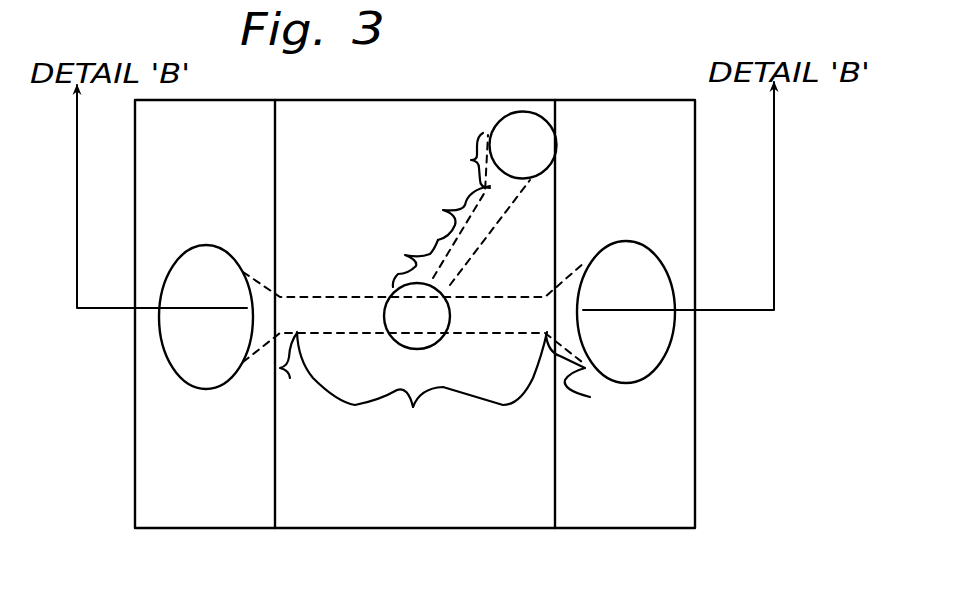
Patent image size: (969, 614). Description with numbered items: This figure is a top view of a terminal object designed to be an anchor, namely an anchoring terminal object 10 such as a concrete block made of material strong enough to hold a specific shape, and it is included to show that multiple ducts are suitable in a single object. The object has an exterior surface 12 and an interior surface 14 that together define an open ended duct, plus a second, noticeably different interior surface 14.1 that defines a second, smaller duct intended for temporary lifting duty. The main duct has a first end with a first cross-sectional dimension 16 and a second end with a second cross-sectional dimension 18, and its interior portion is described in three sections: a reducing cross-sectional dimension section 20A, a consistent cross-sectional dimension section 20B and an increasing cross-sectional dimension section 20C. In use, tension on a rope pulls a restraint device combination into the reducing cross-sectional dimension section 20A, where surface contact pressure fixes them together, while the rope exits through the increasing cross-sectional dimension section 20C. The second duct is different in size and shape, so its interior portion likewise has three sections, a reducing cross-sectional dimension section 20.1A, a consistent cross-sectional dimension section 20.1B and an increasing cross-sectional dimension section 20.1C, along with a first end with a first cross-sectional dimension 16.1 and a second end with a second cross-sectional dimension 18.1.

The anchoring terminal object 10 is at (386, 486).
The exterior surface 12 is at (487, 97).
The interior surface 14 is at (193, 367).
The second interior surface 14.1 is at (500, 148).
The first cross-sectional dimension 16 is at (660, 370).
The first cross-sectional dimension of second duct 16.1 is at (540, 112).
The second cross-sectional dimension 18 is at (173, 373).
The second cross-sectional dimension of second duct 18.1 is at (398, 343).
The reducing cross-sectional dimension section 20A is at (594, 381).
The consistent cross-sectional dimension section 20B is at (422, 387).
The increasing cross-sectional dimension section 20C is at (292, 375).
The reducing cross-sectional dimension section of second duct 20.1A is at (451, 160).
The consistent cross-sectional dimension section of second duct 20.1B is at (435, 213).
The increasing cross-sectional dimension section of second duct 20.1C is at (395, 263).